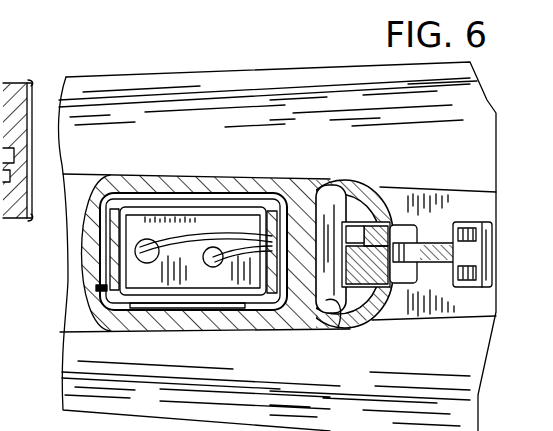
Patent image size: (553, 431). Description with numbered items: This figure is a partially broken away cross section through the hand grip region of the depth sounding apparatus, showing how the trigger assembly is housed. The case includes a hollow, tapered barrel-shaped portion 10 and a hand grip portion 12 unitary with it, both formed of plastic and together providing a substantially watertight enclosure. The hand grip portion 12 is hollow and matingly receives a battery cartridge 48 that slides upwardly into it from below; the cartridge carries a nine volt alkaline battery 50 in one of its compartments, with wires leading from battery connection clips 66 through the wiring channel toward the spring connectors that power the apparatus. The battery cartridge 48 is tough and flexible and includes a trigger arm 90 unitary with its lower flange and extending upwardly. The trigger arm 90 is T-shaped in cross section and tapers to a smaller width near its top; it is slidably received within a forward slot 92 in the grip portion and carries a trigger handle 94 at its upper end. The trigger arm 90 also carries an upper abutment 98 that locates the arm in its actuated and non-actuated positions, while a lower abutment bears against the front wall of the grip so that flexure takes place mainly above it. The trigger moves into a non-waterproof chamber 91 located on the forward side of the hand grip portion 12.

The barrel-shaped portion 10 is at (178, 66).
The hand grip portion 12 is at (171, 176).
The battery cartridge 48 is at (100, 288).
The battery 50 is at (185, 212).
The battery connection clips 66 is at (228, 224).
The trigger arm 90 is at (366, 322).
The non-waterproof chamber 91 is at (333, 312).
The forward slot 92 is at (352, 212).
The trigger handle 94 is at (460, 224).
The upper abutment 98 is at (328, 183).